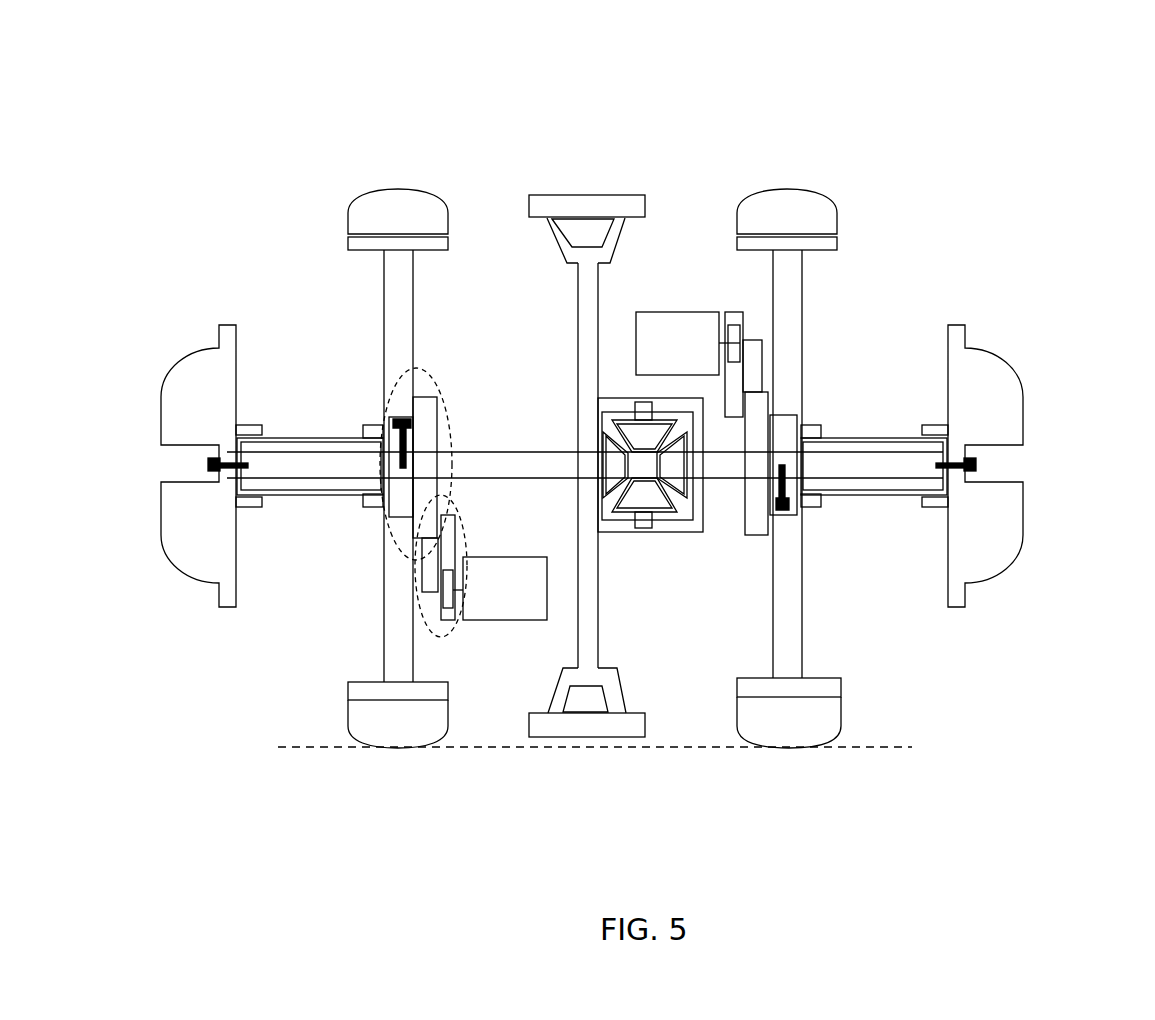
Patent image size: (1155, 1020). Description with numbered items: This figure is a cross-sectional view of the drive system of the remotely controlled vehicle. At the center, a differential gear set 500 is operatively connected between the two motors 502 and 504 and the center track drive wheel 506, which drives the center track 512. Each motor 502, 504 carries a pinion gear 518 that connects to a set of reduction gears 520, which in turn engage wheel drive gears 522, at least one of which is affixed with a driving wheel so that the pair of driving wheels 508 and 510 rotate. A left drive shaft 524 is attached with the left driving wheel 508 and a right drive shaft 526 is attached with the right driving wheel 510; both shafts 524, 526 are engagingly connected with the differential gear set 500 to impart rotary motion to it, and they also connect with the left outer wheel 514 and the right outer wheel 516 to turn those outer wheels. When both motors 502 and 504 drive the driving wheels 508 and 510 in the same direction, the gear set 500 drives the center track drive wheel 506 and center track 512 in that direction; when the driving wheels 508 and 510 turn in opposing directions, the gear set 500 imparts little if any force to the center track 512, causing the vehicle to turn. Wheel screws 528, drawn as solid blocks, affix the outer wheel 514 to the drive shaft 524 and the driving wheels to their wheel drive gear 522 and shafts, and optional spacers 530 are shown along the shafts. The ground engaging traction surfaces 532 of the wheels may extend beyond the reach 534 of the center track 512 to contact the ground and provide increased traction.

The differential gear set 500 is at (662, 508).
The motor 502 is at (495, 578).
The motor 504 is at (685, 322).
The center track drive wheel 506 is at (585, 343).
The left driving wheel 508 is at (384, 288).
The right driving wheel 510 is at (803, 277).
The center track 512 is at (585, 720).
The left outer wheel 514 is at (192, 383).
The right outer wheel 516 is at (995, 400).
The pinion gear 518 is at (733, 330).
The set of reduction gears 520 is at (455, 620).
The wheel drive gear 522 is at (445, 420).
The left drive shaft 524 is at (537, 465).
The right drive shaft 526 is at (868, 463).
The wheel screw 528 is at (208, 465).
The spacer 530 is at (310, 437).
The ground engaging traction surface 532 is at (388, 720).
The reach of the center track 534 is at (846, 752).